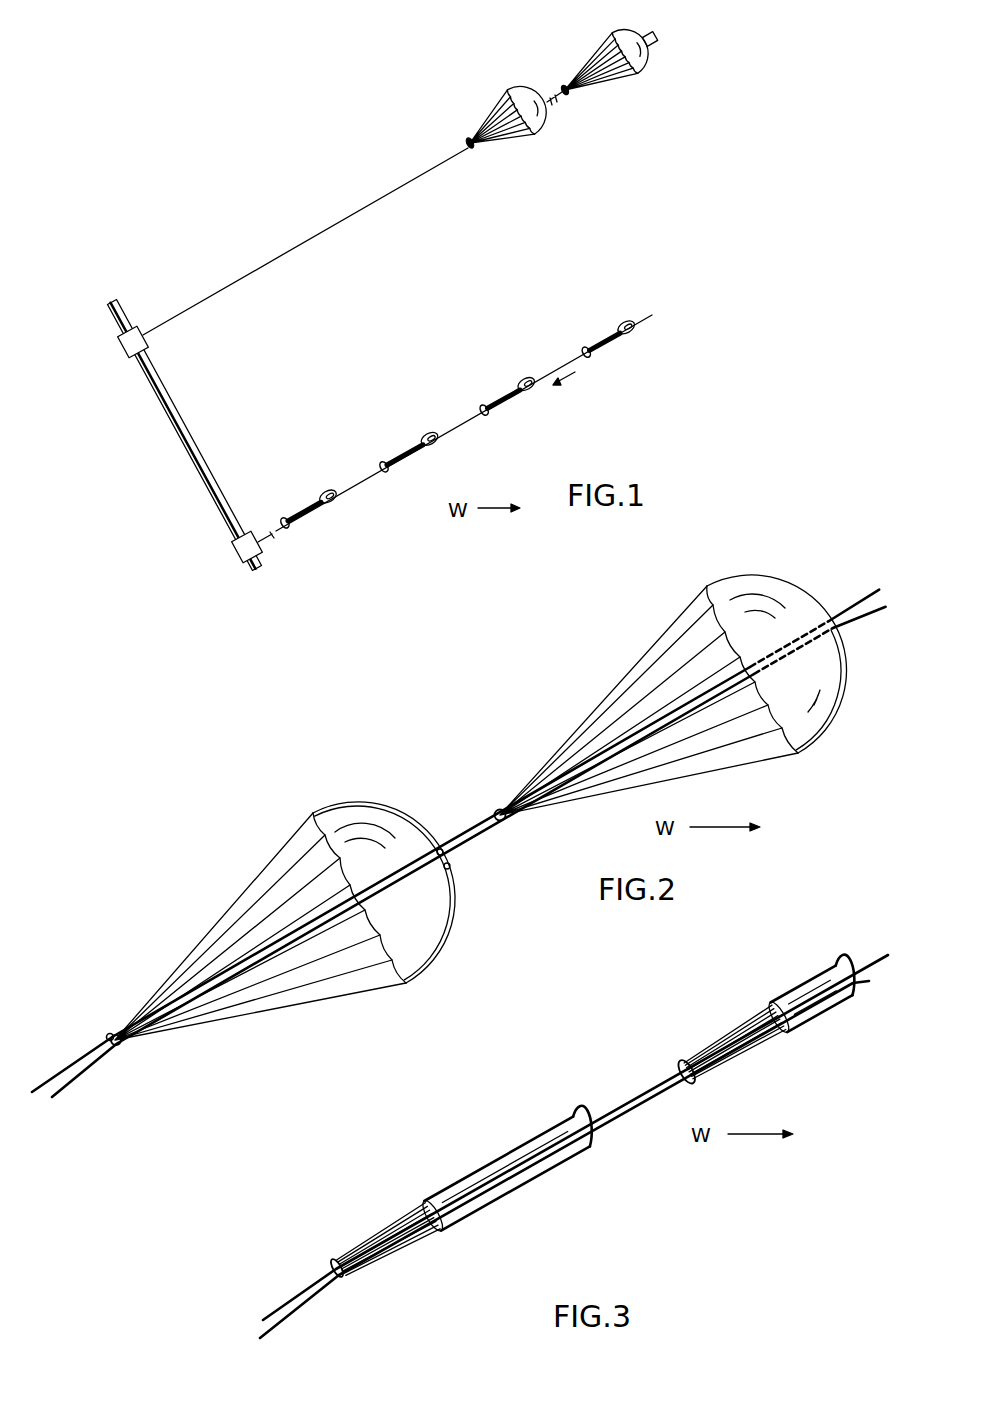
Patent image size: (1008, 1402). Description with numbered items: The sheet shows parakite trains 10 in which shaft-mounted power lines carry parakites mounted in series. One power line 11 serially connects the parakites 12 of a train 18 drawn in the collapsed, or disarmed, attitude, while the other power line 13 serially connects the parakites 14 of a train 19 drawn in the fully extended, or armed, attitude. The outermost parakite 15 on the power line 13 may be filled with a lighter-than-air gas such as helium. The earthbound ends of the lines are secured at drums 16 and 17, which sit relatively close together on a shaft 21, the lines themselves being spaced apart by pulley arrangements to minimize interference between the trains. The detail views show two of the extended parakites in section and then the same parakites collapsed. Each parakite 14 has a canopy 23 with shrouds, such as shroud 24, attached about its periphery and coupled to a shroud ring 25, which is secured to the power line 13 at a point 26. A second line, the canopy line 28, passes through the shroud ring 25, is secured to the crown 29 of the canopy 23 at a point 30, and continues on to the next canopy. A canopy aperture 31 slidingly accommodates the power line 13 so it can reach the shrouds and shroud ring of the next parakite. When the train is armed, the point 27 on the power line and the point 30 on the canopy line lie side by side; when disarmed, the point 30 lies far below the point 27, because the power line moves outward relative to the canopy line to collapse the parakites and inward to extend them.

In FIG. 1, the parakite trains 10 is at (145, 492).
In FIG. 1, the power line 11 is at (462, 425).
In FIG. 1, the parakites 12 is at (626, 323).
In FIG. 1, the power line 13 is at (326, 230).
In FIG. 2, the power line 13 is at (853, 607).
In FIG. 3, the power line 13 is at (288, 1303).
In FIG. 1, the parakites 14 is at (546, 122).
In FIG. 2, the parakites 14 is at (345, 806).
In FIG. 1, the outermost parakite 15 is at (652, 75).
In FIG. 1, the drum 16 is at (240, 560).
In FIG. 1, the drum 17 is at (126, 356).
In FIG. 1, the train 18 is at (554, 316).
In FIG. 1, the train 19 is at (533, 82).
In FIG. 1, the shaft 21 is at (109, 322).
In FIG. 2, the canopy 23 is at (443, 940).
In FIG. 3, the canopy 23 is at (485, 1166).
In FIG. 2, the shroud 24 is at (300, 1002).
In FIG. 2, the shroud ring 25 is at (122, 1047).
In FIG. 3, the shroud ring 25 is at (345, 1280).
In FIG. 2, the securing point 26 is at (108, 1035).
In FIG. 2, the point on power line 27 is at (443, 845).
In FIG. 3, the point on power line 27 is at (610, 1112).
In FIG. 2, the canopy line 28 is at (866, 620).
In FIG. 3, the canopy line 28 is at (300, 1306).
In FIG. 2, the crown 29 is at (843, 675).
In FIG. 2, the securing point 30 is at (449, 866).
In FIG. 3, the securing point 30 is at (438, 1235).
In FIG. 2, the canopy aperture 31 is at (440, 850).